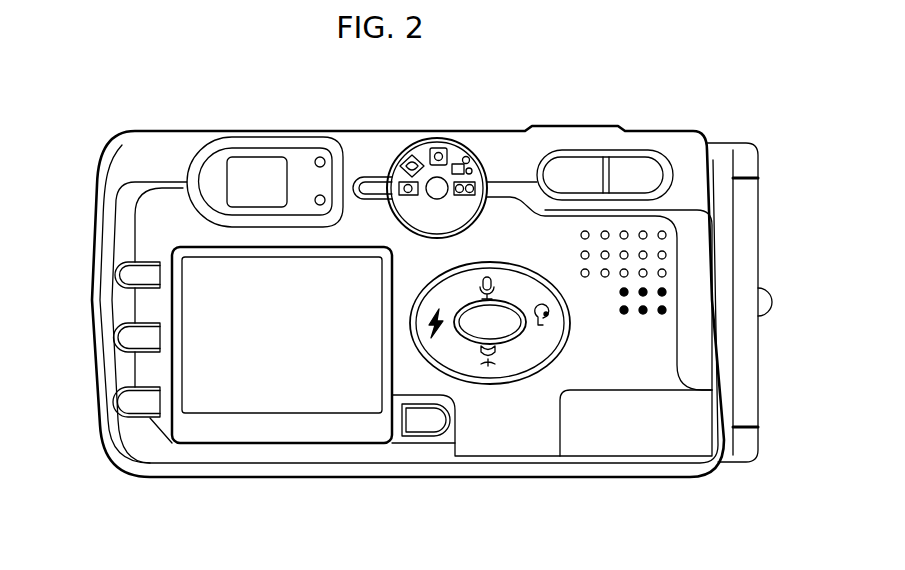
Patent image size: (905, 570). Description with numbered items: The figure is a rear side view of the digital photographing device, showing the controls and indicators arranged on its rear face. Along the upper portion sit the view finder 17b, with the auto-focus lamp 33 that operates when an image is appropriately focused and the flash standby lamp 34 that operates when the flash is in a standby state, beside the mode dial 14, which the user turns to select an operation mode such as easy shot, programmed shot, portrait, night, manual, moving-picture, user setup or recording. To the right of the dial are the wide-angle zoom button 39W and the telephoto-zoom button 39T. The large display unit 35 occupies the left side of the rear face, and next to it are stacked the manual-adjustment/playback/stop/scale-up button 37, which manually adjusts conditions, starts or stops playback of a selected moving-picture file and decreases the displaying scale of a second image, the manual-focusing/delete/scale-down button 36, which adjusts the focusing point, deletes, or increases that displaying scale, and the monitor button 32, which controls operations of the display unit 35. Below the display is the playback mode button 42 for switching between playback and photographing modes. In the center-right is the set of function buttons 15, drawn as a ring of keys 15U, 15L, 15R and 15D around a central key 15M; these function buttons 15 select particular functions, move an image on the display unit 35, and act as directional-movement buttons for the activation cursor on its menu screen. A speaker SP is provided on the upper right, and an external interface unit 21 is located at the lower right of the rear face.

The view finder 17b is at (257, 163).
The auto-focus lamp 33 is at (318, 158).
The flash standby lamp 34 is at (326, 197).
The mode dial 14 is at (447, 163).
The wide-angle zoom button 39W is at (573, 173).
The telephoto-zoom button 39T is at (633, 173).
The manual-adjustment/playback/stop/scale-up button 37 is at (124, 273).
The manual-focusing/delete/scale-down button 36 is at (124, 337).
The monitor button 32 is at (132, 403).
The display unit 35 is at (277, 393).
The playback mode button 42 is at (417, 427).
The set of function buttons 15 is at (520, 385).
The up key (voice recording) 15U is at (480, 283).
The left key (flash) 15L is at (432, 338).
The right key (self-timer) 15R is at (547, 322).
The menu/OK key 15M is at (508, 328).
The down key (macro) 15D is at (503, 357).
The speaker SP is at (668, 292).
The external interface unit 21 is at (677, 440).